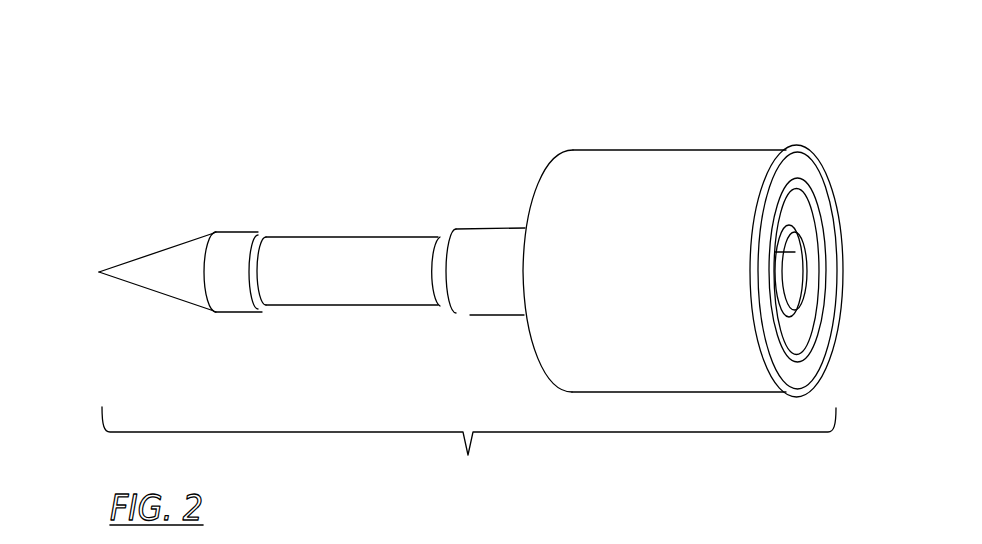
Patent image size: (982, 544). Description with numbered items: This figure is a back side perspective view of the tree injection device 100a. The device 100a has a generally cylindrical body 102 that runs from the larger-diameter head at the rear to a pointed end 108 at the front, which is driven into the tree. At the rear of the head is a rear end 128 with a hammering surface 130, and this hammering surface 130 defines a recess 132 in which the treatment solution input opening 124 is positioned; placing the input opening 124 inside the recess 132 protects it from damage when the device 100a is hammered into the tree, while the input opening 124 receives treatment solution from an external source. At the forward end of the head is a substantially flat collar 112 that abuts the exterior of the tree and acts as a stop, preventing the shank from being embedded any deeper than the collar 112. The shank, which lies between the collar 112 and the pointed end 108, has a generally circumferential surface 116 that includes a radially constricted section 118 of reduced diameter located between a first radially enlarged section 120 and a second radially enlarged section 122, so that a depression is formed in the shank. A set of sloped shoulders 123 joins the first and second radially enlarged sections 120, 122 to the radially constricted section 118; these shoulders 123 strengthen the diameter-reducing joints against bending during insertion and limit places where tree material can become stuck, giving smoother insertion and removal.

The tree injection device 100a is at (720, 102).
The body 102 is at (469, 447).
The pointed end 108 is at (93, 271).
The collar 112 is at (542, 183).
The circumferential surface 116 is at (223, 232).
The radially constricted section 118 is at (267, 313).
The first radially enlarged section 120 is at (482, 311).
The second radially enlarged section 122 is at (228, 303).
The shoulders 123 is at (262, 237).
The treatment solution input opening 124 is at (793, 269).
The rear end 128 is at (838, 183).
The hammering surface 130 is at (828, 212).
The recess 132 is at (802, 325).